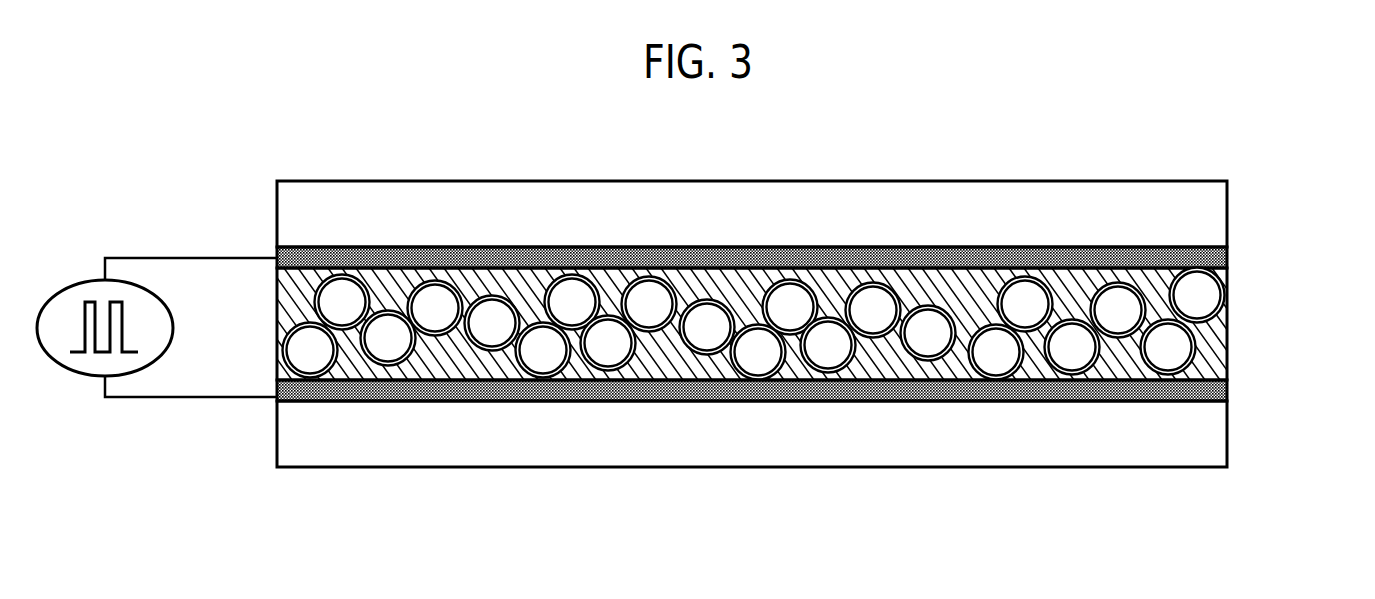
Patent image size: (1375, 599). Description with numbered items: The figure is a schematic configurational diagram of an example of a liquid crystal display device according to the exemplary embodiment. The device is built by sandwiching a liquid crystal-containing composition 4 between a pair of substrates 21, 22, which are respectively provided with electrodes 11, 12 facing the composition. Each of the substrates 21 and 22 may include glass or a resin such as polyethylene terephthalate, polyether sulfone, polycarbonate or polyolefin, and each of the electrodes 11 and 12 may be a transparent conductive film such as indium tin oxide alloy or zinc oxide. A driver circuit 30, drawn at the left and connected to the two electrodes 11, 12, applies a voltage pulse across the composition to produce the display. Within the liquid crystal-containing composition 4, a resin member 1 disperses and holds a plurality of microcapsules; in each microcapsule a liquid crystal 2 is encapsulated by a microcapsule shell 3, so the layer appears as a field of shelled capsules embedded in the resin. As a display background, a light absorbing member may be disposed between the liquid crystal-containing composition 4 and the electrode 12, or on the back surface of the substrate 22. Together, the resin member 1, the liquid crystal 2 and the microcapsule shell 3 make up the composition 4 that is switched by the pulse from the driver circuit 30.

The resin member 1 is at (1228, 373).
The liquid crystal 2 is at (1168, 348).
The microcapsule shell 3 is at (1200, 333).
The liquid crystal-containing composition 4 is at (782, 346).
The electrode 11 is at (1227, 248).
The electrode 12 is at (1228, 392).
The substrate 21 is at (1217, 203).
The substrate 22 is at (1218, 448).
The driver circuit 30 is at (62, 362).